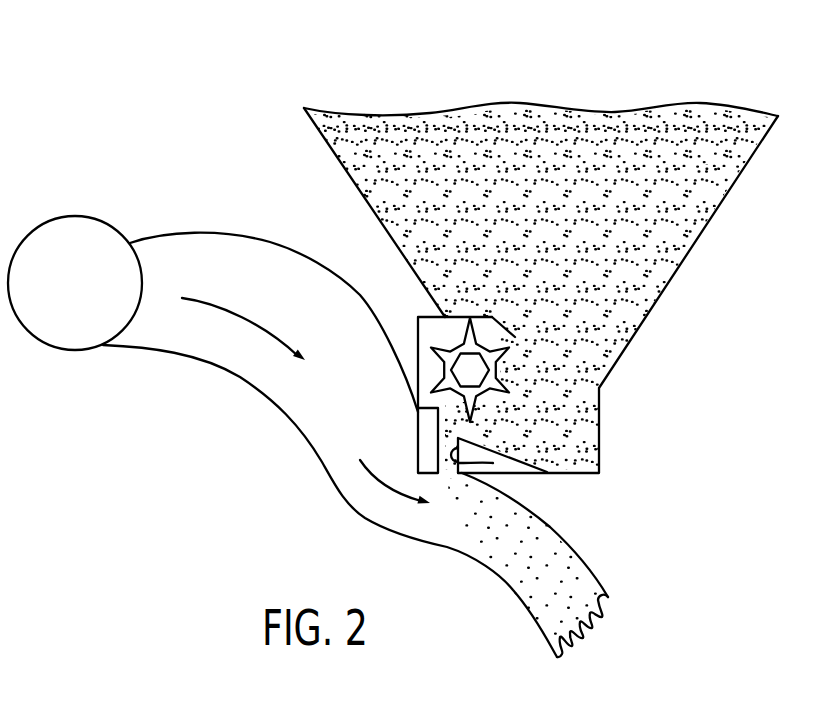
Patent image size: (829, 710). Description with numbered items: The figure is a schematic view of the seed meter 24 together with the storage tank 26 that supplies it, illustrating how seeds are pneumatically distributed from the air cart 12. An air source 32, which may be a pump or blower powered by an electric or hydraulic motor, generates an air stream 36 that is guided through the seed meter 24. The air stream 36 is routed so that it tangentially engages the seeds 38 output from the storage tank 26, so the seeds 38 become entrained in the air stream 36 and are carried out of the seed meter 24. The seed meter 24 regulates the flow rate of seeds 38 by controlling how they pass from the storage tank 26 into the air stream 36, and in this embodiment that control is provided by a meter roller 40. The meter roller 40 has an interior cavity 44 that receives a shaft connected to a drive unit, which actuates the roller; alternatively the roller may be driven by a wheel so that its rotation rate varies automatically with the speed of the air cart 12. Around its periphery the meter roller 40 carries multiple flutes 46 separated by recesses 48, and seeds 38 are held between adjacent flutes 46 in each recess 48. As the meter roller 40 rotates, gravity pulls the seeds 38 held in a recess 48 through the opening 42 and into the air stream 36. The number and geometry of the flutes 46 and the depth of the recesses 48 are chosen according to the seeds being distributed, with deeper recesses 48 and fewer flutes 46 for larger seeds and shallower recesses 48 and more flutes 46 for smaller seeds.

The air cart 12 is at (168, 94).
The seed meter 24 is at (401, 309).
The storage tank 26 is at (527, 288).
The air source 32 is at (72, 217).
The air stream 36 is at (244, 315).
The seeds 38 is at (705, 206).
The meter roller 40 is at (522, 372).
The opening 42 is at (493, 463).
The interior cavity 44 is at (458, 391).
The flutes 46 is at (456, 368).
The recesses 48 is at (482, 345).